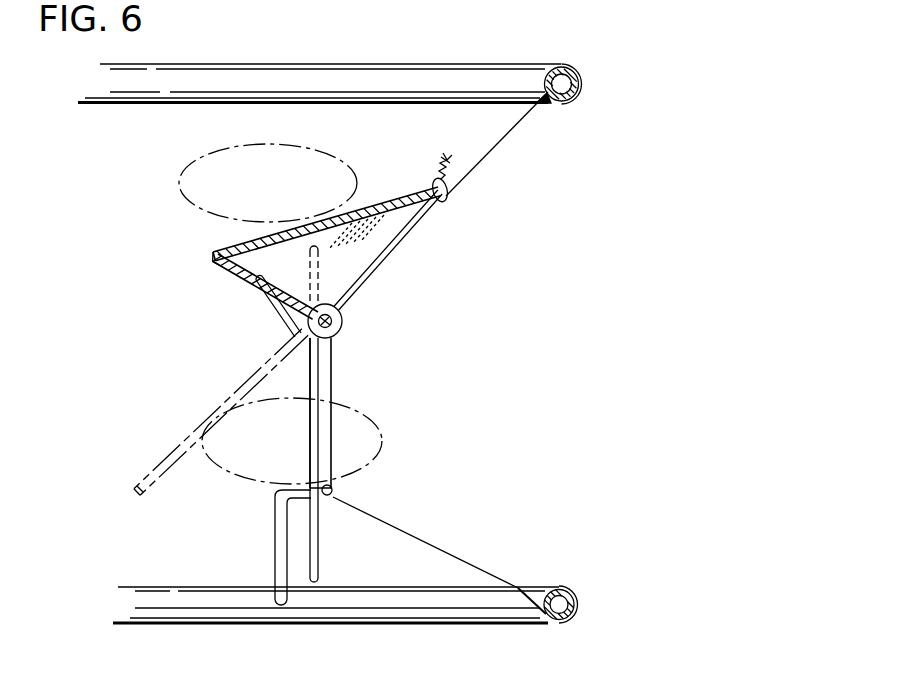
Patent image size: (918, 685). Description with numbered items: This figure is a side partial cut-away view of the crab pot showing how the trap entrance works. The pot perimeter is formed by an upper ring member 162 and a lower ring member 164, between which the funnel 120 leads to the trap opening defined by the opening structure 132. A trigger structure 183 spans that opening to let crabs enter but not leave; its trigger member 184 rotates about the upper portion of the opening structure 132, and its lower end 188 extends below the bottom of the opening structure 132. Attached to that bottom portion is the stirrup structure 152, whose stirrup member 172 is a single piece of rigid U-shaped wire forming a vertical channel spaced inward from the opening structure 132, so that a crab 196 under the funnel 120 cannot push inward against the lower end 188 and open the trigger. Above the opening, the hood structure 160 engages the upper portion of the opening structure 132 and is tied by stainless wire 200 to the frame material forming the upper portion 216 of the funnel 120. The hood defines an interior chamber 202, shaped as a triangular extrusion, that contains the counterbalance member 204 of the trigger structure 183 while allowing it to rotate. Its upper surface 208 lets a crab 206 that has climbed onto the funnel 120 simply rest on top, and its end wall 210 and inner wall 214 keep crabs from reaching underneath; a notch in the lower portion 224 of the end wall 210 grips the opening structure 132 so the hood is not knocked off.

The funnel 120 is at (402, 148).
The opening structure 132 is at (333, 372).
The stirrup structure 152 is at (266, 528).
The hood structure 160 is at (228, 246).
The upper ring member 162 is at (450, 73).
The lower ring member 164 is at (440, 613).
The stirrup member 172 is at (276, 558).
The trigger structure 183 is at (190, 398).
The trigger member 184 is at (309, 362).
The lower end 188 is at (323, 560).
The crab 196 is at (394, 464).
The stainless wire 200 is at (455, 188).
The interior chamber 202 is at (367, 243).
The counterbalance member 204 is at (268, 305).
The crab 206 is at (170, 170).
The upper surface 208 is at (211, 246).
The end wall 210 is at (410, 228).
The inner wall 214 is at (238, 282).
The upper portion 216 is at (501, 150).
The lower portion 224 is at (343, 304).